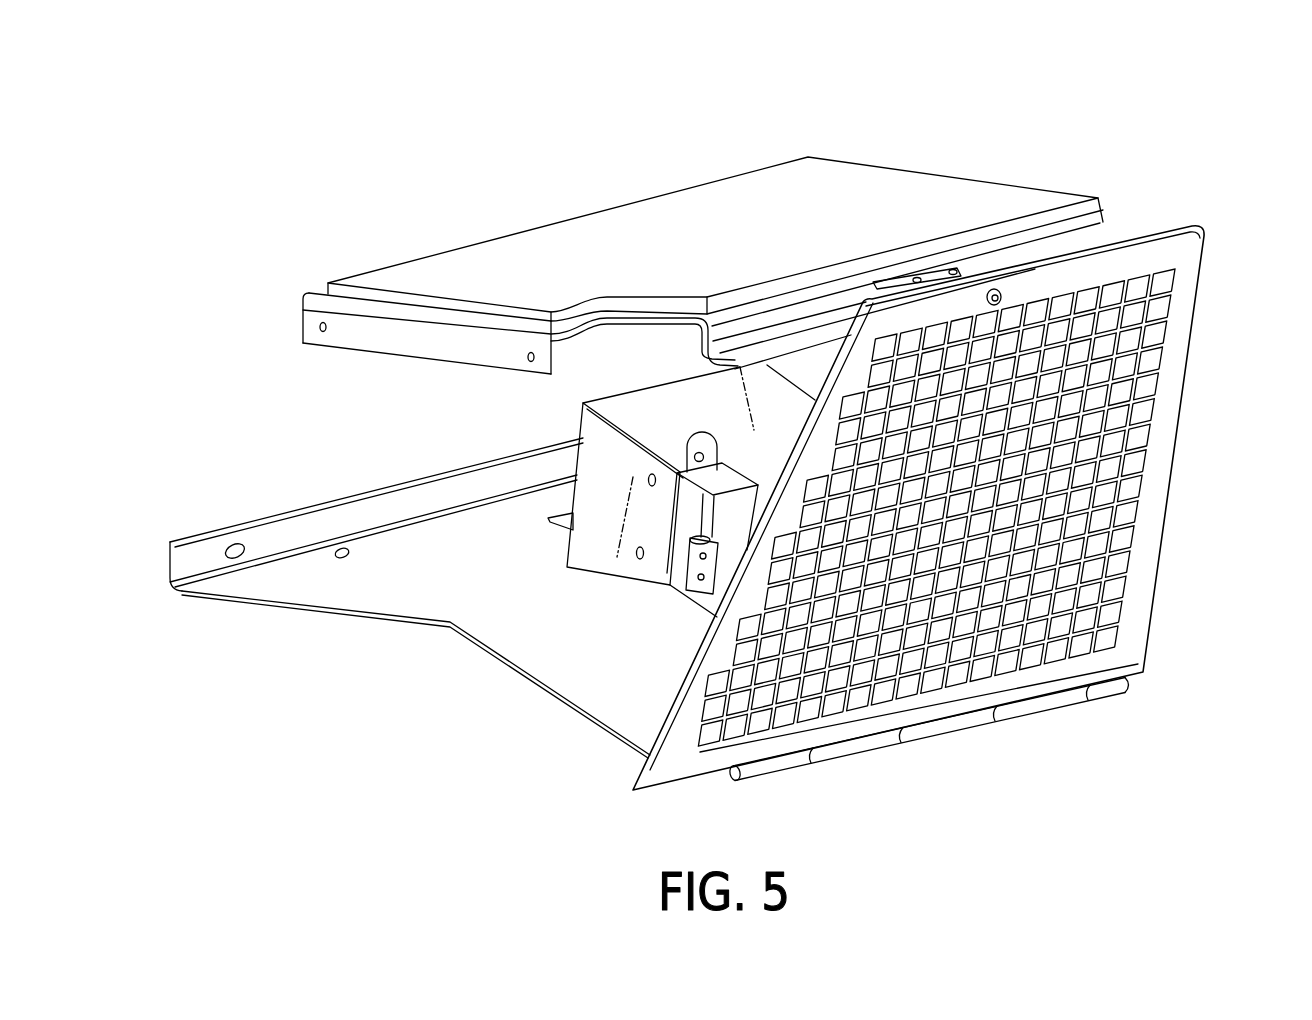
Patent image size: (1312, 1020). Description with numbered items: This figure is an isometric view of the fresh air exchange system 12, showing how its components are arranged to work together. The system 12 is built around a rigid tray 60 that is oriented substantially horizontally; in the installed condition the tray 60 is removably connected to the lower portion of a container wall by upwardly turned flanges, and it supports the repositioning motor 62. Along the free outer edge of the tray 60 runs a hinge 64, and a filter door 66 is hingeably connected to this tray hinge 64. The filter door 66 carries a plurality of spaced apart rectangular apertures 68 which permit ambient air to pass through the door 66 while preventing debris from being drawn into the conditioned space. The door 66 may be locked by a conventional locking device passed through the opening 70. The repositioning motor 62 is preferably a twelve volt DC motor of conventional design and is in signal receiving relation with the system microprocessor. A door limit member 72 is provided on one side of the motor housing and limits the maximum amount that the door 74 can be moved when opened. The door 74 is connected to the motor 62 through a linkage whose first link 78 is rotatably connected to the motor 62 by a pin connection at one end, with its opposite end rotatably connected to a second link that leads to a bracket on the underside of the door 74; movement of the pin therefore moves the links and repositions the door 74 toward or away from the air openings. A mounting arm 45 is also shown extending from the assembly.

The fresh air exchange system 12 is at (496, 192).
The mounting arm 45 is at (280, 530).
The rigid tray 60 is at (538, 656).
The repositioning motor 62 is at (597, 440).
The hinge 64 is at (837, 762).
The filter door 66 is at (1188, 314).
The grille openings 68 is at (1058, 478).
The opening 70 is at (1004, 295).
The door limit member 72 is at (732, 478).
The door 74 is at (704, 208).
The first link 78 is at (682, 558).